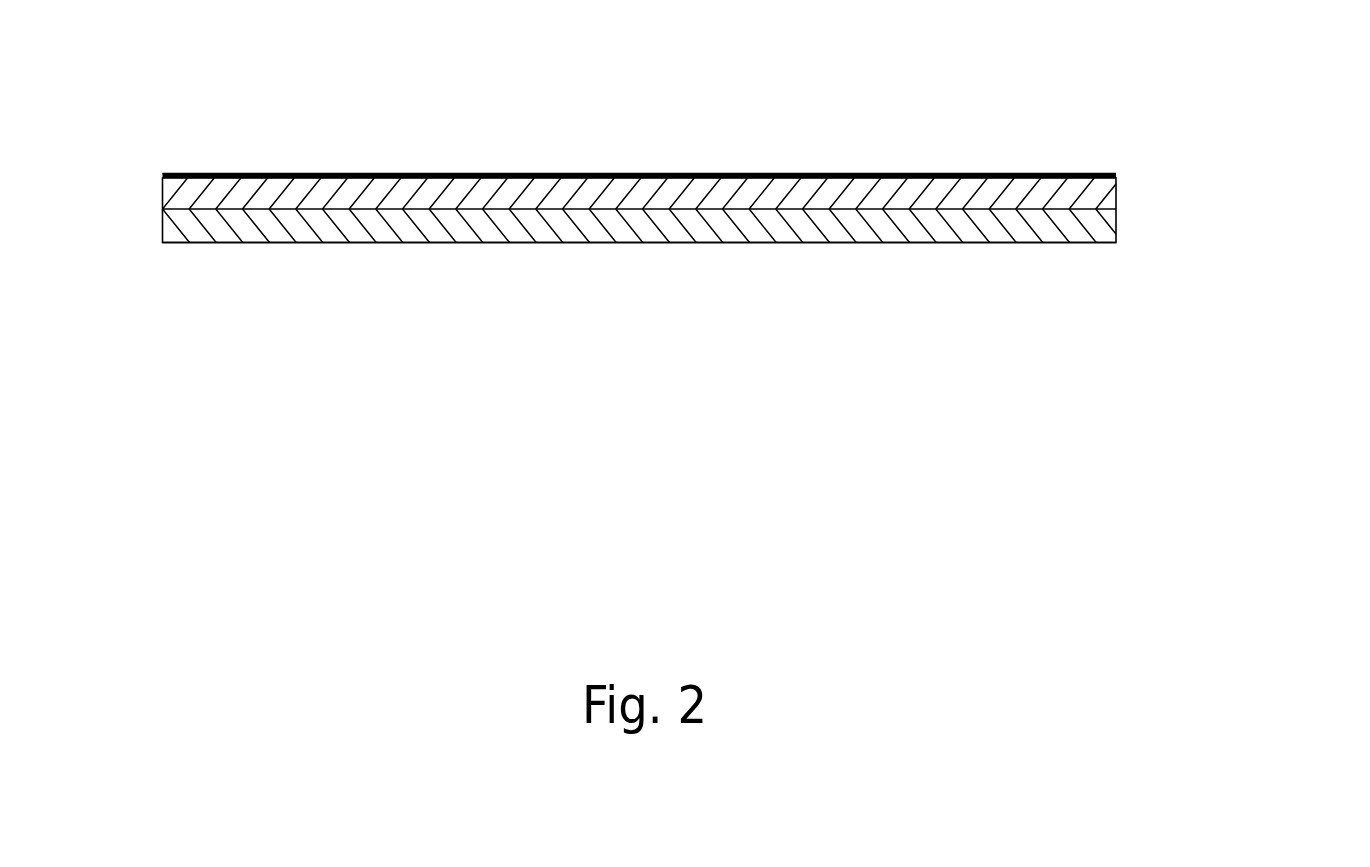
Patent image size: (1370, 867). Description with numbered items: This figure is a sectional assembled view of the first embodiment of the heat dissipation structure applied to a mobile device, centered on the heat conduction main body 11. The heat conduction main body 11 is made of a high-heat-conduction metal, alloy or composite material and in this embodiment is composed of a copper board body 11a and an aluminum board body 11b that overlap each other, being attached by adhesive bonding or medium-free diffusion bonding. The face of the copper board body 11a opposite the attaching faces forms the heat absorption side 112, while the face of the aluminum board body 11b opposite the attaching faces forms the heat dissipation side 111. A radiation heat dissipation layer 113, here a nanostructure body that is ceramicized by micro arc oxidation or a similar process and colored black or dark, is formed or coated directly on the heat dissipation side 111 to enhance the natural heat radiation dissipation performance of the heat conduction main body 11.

The heat conduction main body 11 is at (1232, 150).
The copper board body 11a is at (1090, 228).
The aluminum board body 11b is at (1105, 195).
The heat dissipation side 111 is at (162, 175).
The heat absorption side 112 is at (640, 243).
The radiation heat dissipation layer 113 is at (915, 173).